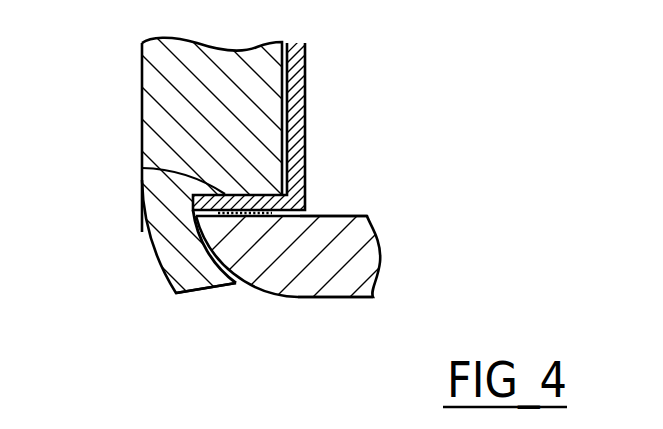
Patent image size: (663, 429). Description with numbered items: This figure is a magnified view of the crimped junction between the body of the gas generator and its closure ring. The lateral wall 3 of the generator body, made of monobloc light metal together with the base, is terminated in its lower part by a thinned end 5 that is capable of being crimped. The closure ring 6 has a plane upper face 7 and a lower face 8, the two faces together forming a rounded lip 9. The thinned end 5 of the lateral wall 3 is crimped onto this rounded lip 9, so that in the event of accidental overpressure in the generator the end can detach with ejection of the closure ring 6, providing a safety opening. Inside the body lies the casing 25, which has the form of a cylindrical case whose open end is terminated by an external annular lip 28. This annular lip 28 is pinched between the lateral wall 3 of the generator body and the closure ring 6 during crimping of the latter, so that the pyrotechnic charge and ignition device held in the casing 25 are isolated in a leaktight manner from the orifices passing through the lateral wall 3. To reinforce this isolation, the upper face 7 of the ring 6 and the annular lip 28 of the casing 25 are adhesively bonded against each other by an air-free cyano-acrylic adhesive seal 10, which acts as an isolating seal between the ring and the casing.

The lateral wall 3 is at (190, 113).
The thinned end 5 is at (193, 272).
The closure ring 6 is at (347, 243).
The upper face 7 is at (337, 215).
The lower face 8 is at (330, 297).
The rounded lip 9 is at (230, 280).
The cyano-acrylic adhesive seal 10 is at (250, 215).
The casing 25 is at (305, 90).
The external annular lip 28 is at (190, 172).